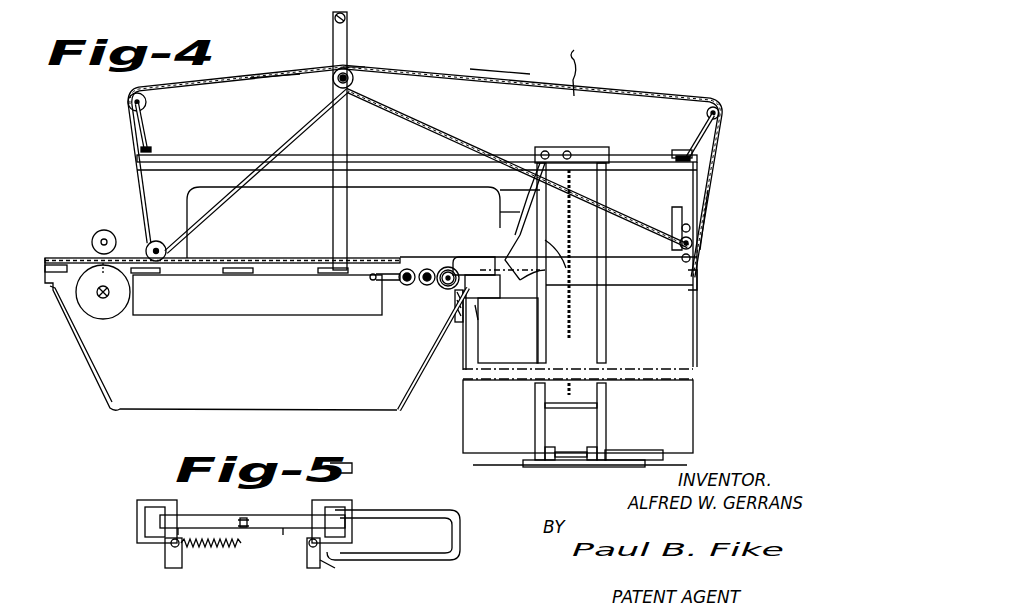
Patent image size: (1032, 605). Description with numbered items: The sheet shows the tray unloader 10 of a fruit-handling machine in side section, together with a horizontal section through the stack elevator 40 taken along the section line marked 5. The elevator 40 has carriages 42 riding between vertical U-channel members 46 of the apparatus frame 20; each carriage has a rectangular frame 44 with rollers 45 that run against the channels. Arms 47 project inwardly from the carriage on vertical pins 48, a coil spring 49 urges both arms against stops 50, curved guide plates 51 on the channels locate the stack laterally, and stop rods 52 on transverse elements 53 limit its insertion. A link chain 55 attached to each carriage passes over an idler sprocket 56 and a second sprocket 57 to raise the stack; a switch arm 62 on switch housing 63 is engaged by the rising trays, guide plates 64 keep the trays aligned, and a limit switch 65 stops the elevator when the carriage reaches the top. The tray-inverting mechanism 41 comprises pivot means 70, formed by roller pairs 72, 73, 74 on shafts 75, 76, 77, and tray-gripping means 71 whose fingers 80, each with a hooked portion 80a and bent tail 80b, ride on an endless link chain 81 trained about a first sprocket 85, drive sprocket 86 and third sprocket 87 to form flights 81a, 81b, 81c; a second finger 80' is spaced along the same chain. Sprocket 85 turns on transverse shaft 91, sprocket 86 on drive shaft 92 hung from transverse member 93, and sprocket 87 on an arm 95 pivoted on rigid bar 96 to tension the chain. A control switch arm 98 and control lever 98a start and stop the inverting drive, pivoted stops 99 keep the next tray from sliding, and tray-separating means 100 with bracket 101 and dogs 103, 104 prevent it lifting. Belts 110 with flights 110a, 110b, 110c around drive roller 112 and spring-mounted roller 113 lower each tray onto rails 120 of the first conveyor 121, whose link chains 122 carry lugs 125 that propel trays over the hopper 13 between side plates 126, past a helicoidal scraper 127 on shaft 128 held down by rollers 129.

In FIG. 4, the tray unloader 10 is at (662, 68).
In FIG. 4, the hopper 13 is at (246, 367).
In FIG. 4, the apparatus frame 20 is at (704, 278).
In FIG. 4, the elevator 40 is at (615, 452).
In FIG. 5, the elevator 40 is at (158, 548).
In FIG. 4, the tray-inverting mechanism 41 is at (366, 66).
In FIG. 4, the carriage 42 is at (544, 449).
In FIG. 5, the carriage 42 is at (340, 570).
In FIG. 4, the rectangular frame 44 is at (543, 408).
In FIG. 5, the rectangular frame 44 is at (335, 487).
In FIG. 5, the roller 45 is at (176, 520).
In FIG. 4, the U-channel member 46 is at (548, 318).
In FIG. 5, the U-channel member 46 is at (146, 516).
In FIG. 4, the arm 47 is at (540, 456).
In FIG. 5, the arm 47 is at (172, 566).
In FIG. 5, the vertical pin 48 is at (168, 542).
In FIG. 5, the coil spring 49 is at (226, 548).
In FIG. 4, the stop 50 is at (590, 448).
In FIG. 5, the stop 50 is at (180, 530).
In FIG. 4, the curved guide plate 51 is at (665, 457).
In FIG. 5, the curved guide plate 51 is at (458, 520).
In FIG. 4, the stop rod 52 is at (448, 333).
In FIG. 4, the transverse element 53 is at (455, 308).
In FIG. 4, the link chain 55 is at (573, 335).
In FIG. 5, the link chain 55 is at (246, 517).
In FIG. 4, the idler sprocket 56 is at (576, 148).
In FIG. 4, the second sprocket 57 is at (546, 147).
In FIG. 4, the switch arm 62 is at (510, 256).
In FIG. 4, the switch housing 63 is at (525, 245).
In FIG. 4, the guide plate 64 is at (515, 329).
In FIG. 4, the limit switch 65 is at (538, 160).
In FIG. 4, the pivot means 70 is at (442, 262).
In FIG. 4, the tray-gripping means 71 is at (580, 50).
In FIG. 4, the first roller pair 72 is at (445, 290).
In FIG. 4, the second roller pair 73 is at (410, 268).
In FIG. 4, the third roller pair 74 is at (428, 268).
In FIG. 4, the shaft 75 is at (470, 283).
In FIG. 4, the shaft 76 is at (460, 278).
In FIG. 4, the shaft 77 is at (398, 284).
In FIG. 4, the tray-gripping finger 80 is at (598, 73).
In FIG. 4, the hooked portion 80a is at (574, 60).
In FIG. 4, the bent tail 80b is at (578, 52).
In FIG. 4, the second finger 80' is at (482, 184).
In FIG. 4, the endless link chain 81 is at (500, 72).
In FIG. 4, the first flight 81a is at (420, 122).
In FIG. 4, the second flight 81b is at (449, 73).
In FIG. 4, the third flight 81c is at (713, 195).
In FIG. 4, the first sprocket 85 is at (698, 240).
In FIG. 4, the second sprocket 86 is at (358, 81).
In FIG. 4, the third sprocket 87 is at (720, 114).
In FIG. 4, the transverse shaft 91 is at (700, 246).
In FIG. 4, the drive shaft 92 is at (334, 84).
In FIG. 4, the transverse member 93 is at (336, 18).
In FIG. 4, the arm 95 is at (700, 128).
In FIG. 4, the rigid bar 96 is at (686, 155).
In FIG. 4, the control switch arm 98 is at (555, 272).
In FIG. 4, the control lever 98a is at (560, 262).
In FIG. 4, the stop 99 is at (482, 298).
In FIG. 4, the tray-separating means 100 is at (668, 282).
In FIG. 4, the bracket 101 is at (680, 215).
In FIG. 4, the upper dog 103 is at (682, 235).
In FIG. 4, the lower dog 104 is at (700, 293).
In FIG. 4, the belt 110 is at (132, 192).
In FIG. 4, the downwardly inclined flight 110a is at (230, 196).
In FIG. 4, the vertical flight 110b is at (130, 144).
In FIG. 4, the third flight 110c is at (262, 76).
In FIG. 4, the second roller 112 is at (168, 251).
In FIG. 4, the third roller 113 is at (150, 104).
In FIG. 4, the rail 120 is at (320, 276).
In FIG. 4, the first conveyor 121 is at (302, 248).
In FIG. 4, the link chain 122 is at (345, 258).
In FIG. 4, the lug 125 is at (348, 245).
In FIG. 4, the side plate 126 is at (400, 218).
In FIG. 4, the helicoidal fruit scraper 127 is at (122, 296).
In FIG. 4, the shaft 128 is at (108, 300).
In FIG. 4, the roller 129 is at (92, 242).
In FIG. 4, the section line 5 is at (505, 350).